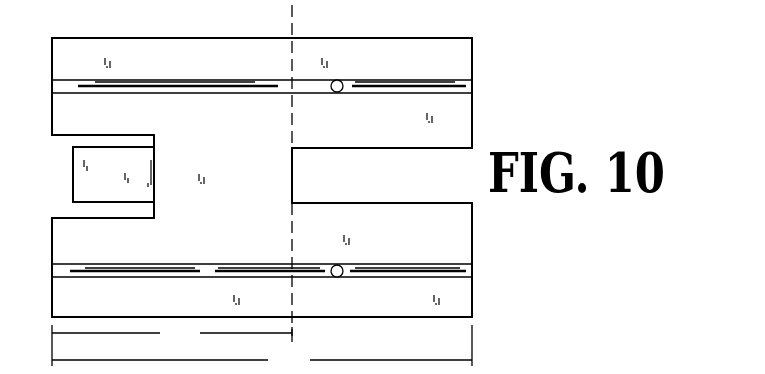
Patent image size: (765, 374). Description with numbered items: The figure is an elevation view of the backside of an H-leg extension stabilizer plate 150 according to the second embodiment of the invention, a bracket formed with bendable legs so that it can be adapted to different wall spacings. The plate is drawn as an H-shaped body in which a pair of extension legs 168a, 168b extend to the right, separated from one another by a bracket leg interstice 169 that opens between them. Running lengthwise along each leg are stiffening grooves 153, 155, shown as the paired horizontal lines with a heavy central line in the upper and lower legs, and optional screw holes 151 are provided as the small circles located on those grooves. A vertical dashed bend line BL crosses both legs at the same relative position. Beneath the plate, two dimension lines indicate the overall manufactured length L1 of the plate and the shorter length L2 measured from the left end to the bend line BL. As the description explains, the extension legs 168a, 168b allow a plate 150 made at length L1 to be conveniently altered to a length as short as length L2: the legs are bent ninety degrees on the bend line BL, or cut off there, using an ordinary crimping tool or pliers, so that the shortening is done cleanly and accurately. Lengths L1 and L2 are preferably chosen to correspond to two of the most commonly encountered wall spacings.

The H-leg extension stabilizer plate 150 is at (403, 33).
The screw holes 151 is at (337, 92).
The stiffening groove 153 is at (207, 263).
The stiffening groove 155 is at (234, 91).
The extension leg 168a is at (472, 118).
The extension leg 168b is at (472, 253).
The bracket leg interstice 169 is at (448, 191).
The bend line BL is at (292, 14).
The length L1 is at (262, 349).
The length L2 is at (172, 343).